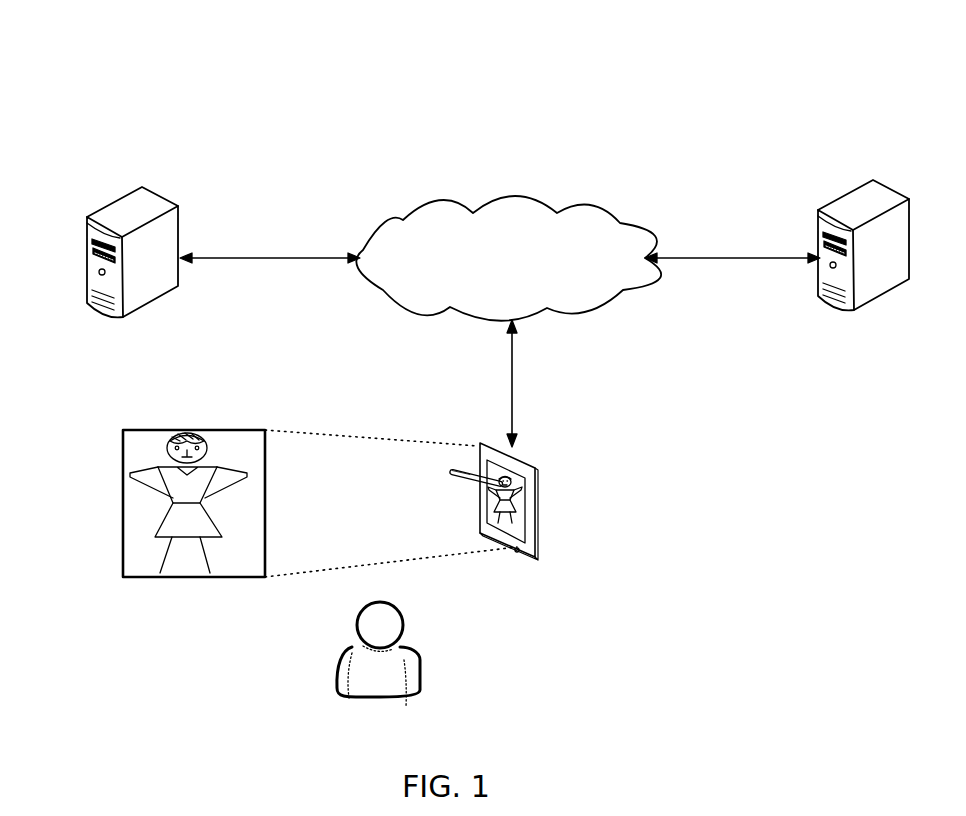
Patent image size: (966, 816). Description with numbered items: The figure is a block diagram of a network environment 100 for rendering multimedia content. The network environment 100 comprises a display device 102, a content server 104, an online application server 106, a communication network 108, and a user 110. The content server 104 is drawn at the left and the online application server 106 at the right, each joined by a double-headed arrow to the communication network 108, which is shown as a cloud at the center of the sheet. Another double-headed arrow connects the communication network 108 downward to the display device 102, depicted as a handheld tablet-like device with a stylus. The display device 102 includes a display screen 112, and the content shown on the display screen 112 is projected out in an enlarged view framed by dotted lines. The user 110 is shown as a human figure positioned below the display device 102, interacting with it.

The network environment 100 is at (808, 96).
The display device 102 is at (518, 453).
The content server 104 is at (140, 186).
The online application server 106 is at (862, 185).
The communication network 108 is at (497, 283).
The user 110 is at (375, 602).
The display screen 112 is at (143, 430).